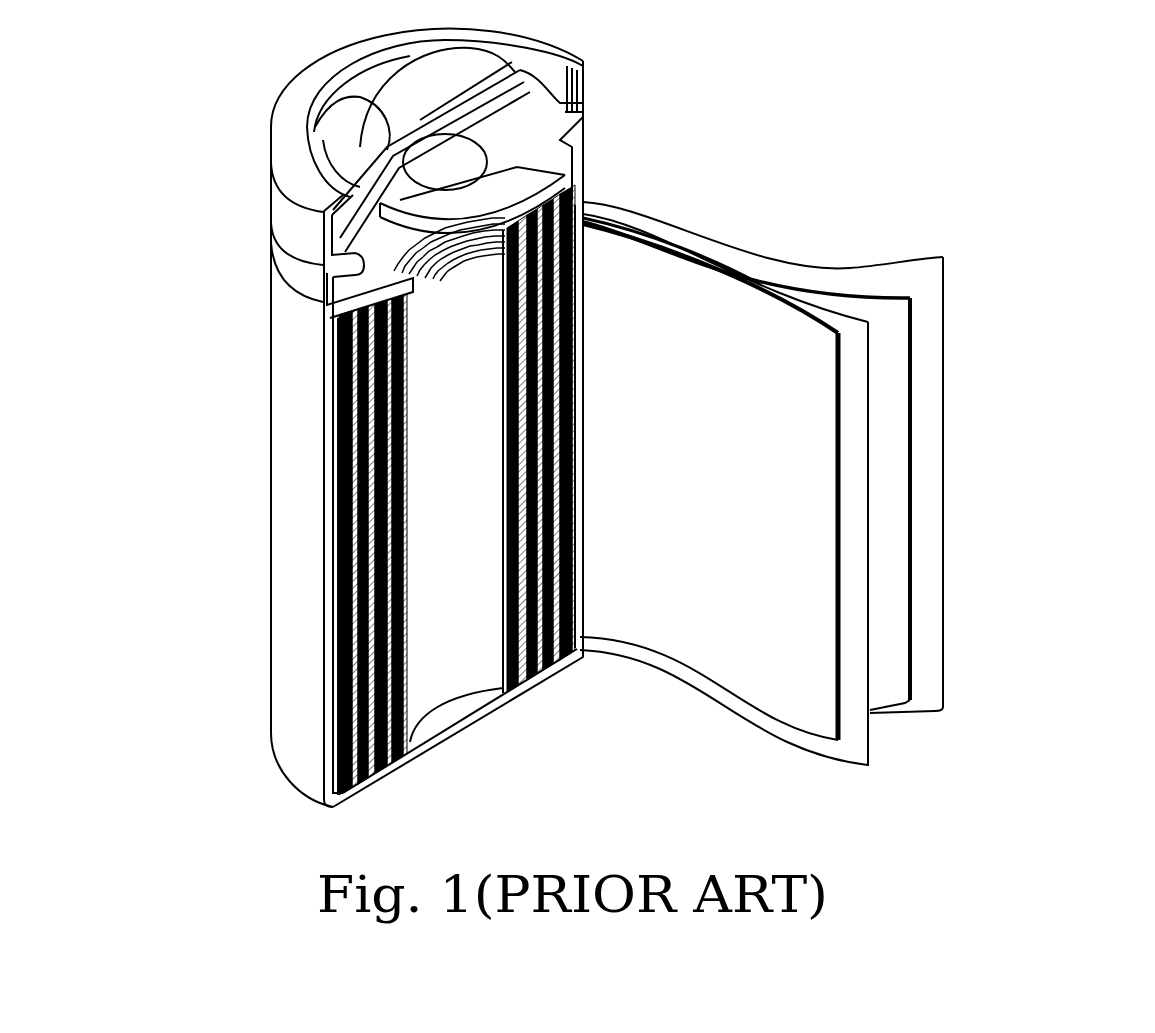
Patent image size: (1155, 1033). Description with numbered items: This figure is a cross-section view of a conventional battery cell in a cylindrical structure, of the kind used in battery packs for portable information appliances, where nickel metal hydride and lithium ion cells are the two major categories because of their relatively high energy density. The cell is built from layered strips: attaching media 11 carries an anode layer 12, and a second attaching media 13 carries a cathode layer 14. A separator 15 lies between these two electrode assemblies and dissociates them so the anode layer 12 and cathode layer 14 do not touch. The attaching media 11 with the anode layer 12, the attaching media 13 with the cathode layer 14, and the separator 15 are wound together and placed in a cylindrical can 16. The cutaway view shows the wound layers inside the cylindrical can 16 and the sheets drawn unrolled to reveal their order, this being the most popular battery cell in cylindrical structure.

The attaching media 11 is at (912, 390).
The anode layer 12 is at (893, 443).
The attaching media 13 is at (770, 500).
The cathode layer 14 is at (840, 570).
The separator 15 is at (850, 357).
The cylindrical can 16 is at (298, 470).